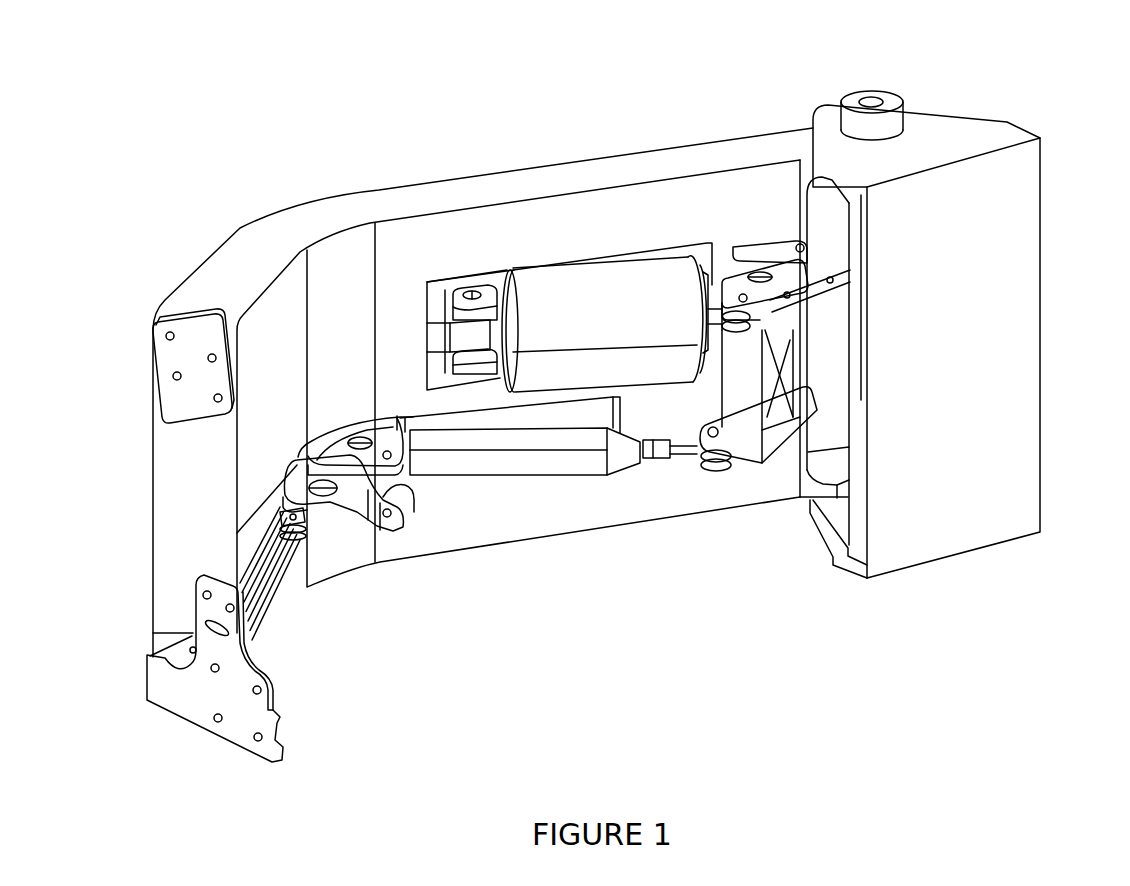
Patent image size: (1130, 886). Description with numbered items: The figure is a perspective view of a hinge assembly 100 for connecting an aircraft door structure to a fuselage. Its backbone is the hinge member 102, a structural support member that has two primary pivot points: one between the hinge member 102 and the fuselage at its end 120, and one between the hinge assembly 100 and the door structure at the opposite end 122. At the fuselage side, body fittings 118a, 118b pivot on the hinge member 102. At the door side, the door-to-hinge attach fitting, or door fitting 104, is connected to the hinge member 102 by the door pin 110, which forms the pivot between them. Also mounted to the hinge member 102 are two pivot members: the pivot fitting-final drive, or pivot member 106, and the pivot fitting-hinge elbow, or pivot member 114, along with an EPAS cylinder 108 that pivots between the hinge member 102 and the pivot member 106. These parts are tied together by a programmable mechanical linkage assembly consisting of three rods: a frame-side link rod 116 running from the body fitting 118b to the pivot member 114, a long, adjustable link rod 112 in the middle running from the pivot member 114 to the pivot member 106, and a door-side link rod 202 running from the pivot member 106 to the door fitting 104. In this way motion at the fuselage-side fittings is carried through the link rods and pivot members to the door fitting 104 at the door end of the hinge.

The hinge assembly 100 is at (346, 140).
The hinge member 102 is at (262, 210).
The door-to-hinge attach fitting 104 is at (972, 553).
The pivot fitting-final drive 106 is at (748, 468).
The EPAS cylinder 108 is at (655, 380).
The pin door-to-hinge 110 is at (880, 87).
The adjustable link rod 112 is at (563, 477).
The pivot fitting-hinge elbow 114 is at (335, 540).
The frame-side link rod 116 is at (280, 588).
The body fitting 118a is at (187, 407).
The body fitting 118b is at (192, 723).
The end 120 is at (161, 560).
The end 122 is at (991, 358).
The door-side link rod 202 is at (832, 272).